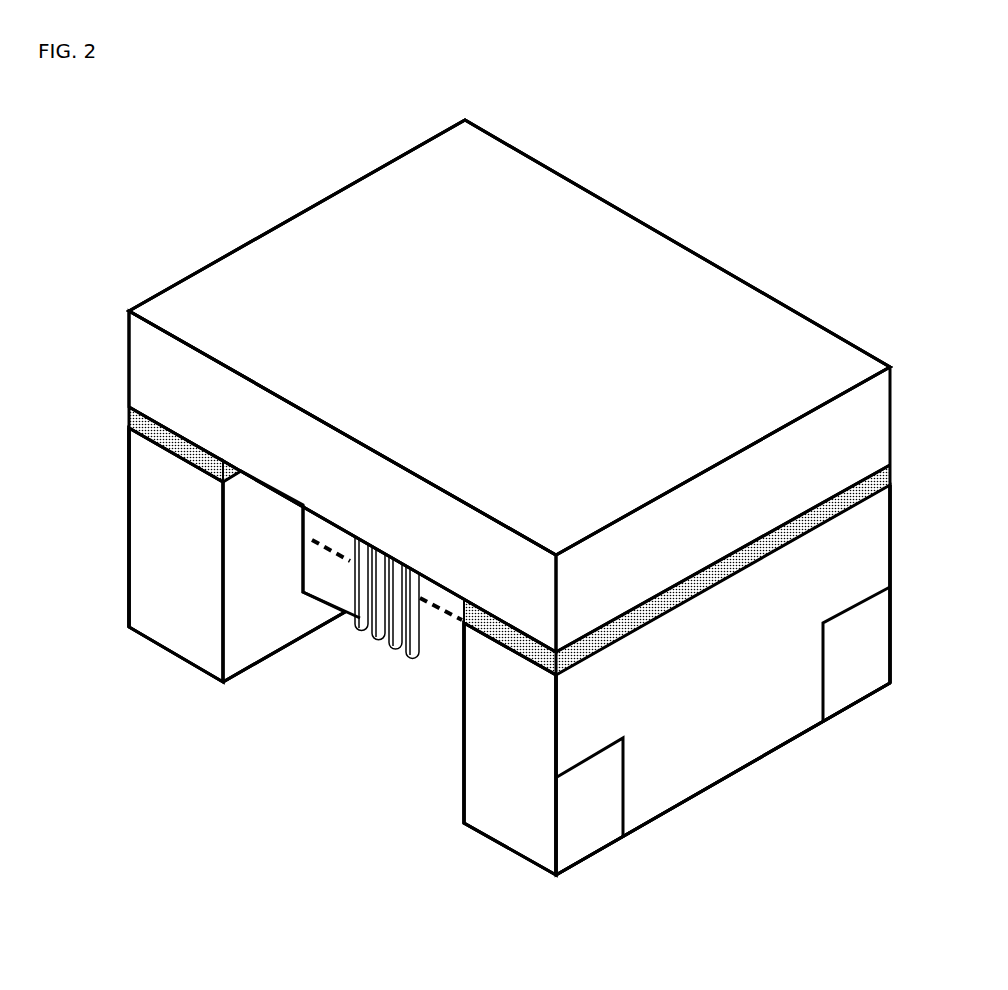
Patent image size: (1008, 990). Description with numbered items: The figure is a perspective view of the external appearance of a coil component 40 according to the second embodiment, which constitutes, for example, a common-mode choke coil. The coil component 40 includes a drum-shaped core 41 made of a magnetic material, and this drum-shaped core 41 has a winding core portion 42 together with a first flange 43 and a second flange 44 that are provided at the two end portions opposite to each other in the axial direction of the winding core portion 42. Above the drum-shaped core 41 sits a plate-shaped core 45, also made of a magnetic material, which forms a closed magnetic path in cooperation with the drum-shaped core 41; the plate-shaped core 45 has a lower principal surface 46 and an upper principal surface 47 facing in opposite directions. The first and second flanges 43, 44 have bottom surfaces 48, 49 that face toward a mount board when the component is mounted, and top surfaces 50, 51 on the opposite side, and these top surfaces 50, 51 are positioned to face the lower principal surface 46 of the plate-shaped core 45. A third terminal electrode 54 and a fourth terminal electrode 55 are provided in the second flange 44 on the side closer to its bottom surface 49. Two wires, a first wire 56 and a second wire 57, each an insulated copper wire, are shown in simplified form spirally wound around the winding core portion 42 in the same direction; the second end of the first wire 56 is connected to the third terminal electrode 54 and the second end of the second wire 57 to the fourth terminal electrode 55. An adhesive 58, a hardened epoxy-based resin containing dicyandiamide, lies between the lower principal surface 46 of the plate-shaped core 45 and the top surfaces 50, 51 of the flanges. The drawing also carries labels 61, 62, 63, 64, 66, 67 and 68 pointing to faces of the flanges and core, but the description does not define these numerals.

The coil component 40 is at (711, 203).
The drum-shaped core 41 is at (117, 477).
The winding core portion 42 is at (440, 657).
The first flange 43 is at (158, 650).
The second flange 44 is at (492, 840).
The plate-shaped core 45 is at (350, 186).
The lower principal surface 46 is at (273, 455).
The upper principal surface 47 is at (529, 180).
The bottom surface 48 is at (278, 627).
The bottom surface 49 is at (662, 787).
The top surface 50 is at (157, 422).
The top surface 51 is at (828, 508).
The third terminal electrode 54 is at (857, 675).
The fourth terminal electrode 55 is at (583, 847).
The first wire 56 is at (360, 633).
The second wire 57 is at (377, 637).
The adhesive 58 is at (130, 417).
The side surface 61 is at (158, 490).
The side surface 62 is at (693, 772).
The inner surface 63 is at (253, 633).
The inner surface 64 is at (483, 784).
The front surface 66 is at (140, 553).
The side surface 67 is at (862, 534).
The front surface 68 is at (476, 760).